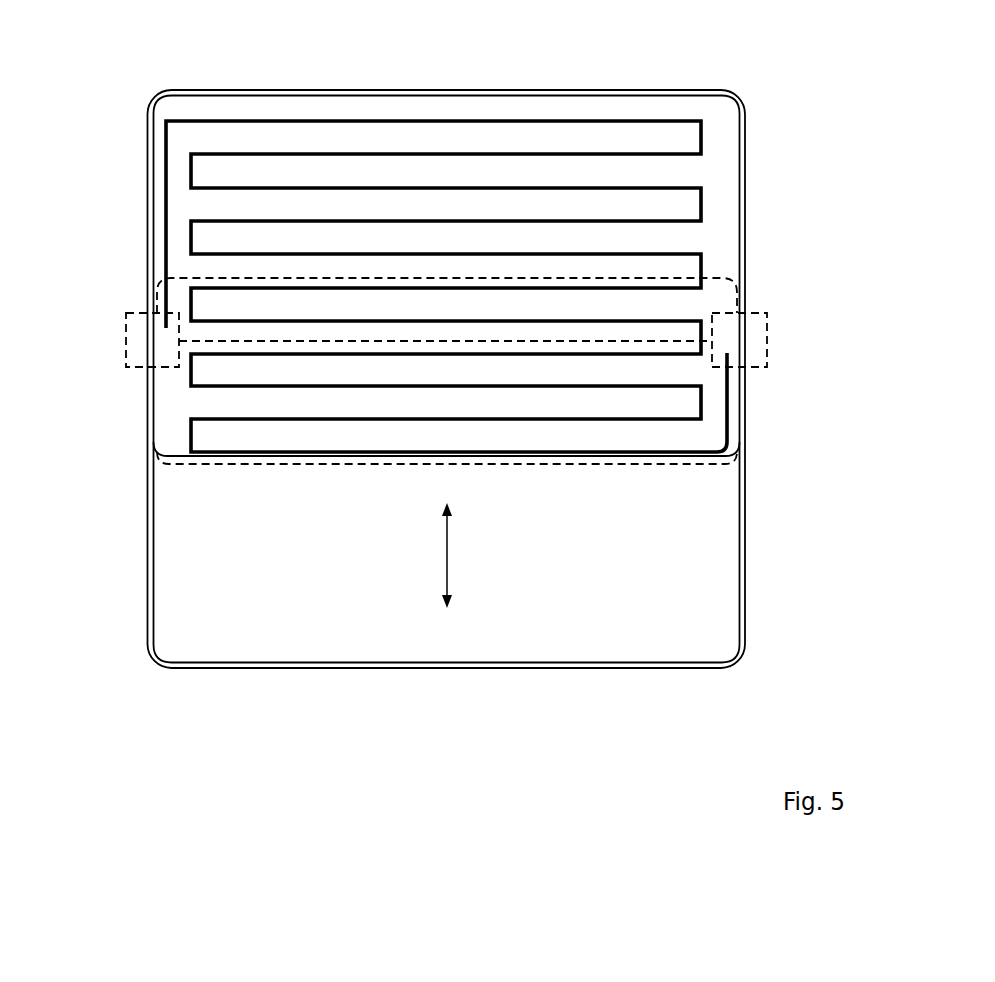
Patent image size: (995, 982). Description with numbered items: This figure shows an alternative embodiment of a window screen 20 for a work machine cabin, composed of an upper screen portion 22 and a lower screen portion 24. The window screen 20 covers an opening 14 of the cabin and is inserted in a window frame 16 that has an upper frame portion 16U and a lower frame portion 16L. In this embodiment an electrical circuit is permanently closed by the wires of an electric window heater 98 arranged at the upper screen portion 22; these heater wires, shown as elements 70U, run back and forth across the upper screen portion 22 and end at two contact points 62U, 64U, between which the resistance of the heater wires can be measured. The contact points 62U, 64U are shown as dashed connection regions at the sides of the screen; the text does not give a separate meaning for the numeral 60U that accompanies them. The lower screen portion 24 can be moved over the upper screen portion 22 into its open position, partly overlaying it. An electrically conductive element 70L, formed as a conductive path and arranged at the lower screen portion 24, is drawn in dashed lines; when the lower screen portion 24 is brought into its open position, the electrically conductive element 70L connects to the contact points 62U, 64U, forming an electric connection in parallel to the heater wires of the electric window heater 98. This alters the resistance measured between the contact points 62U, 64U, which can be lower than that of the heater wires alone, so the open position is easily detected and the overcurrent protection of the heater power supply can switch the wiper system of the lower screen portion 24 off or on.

The opening 14 is at (402, 610).
The window frame 16 is at (146, 186).
The upper frame portion 16U is at (150, 400).
The lower frame portion 16L is at (150, 557).
The window screen 20 is at (719, 162).
The upper screen portion 22 is at (722, 213).
The lower screen portion 24 is at (333, 468).
The upper connector 60U is at (444, 297).
The contact point 62U is at (137, 312).
The contact point 64U is at (758, 312).
The heater wires 70U is at (446, 286).
The electrically conductive element 70L is at (397, 343).
The electric window heater 98 is at (432, 119).